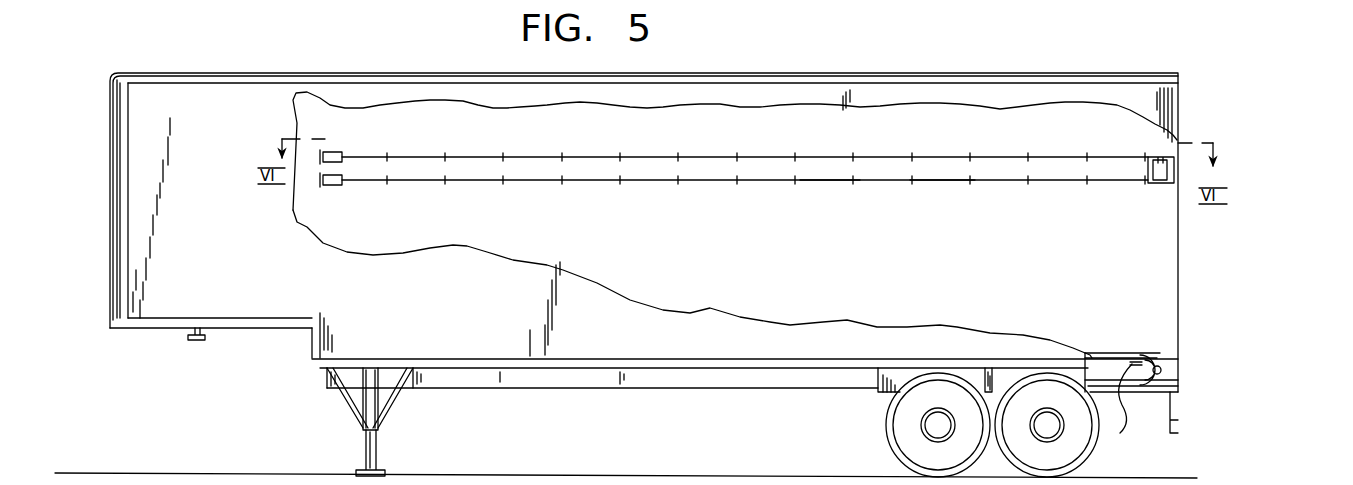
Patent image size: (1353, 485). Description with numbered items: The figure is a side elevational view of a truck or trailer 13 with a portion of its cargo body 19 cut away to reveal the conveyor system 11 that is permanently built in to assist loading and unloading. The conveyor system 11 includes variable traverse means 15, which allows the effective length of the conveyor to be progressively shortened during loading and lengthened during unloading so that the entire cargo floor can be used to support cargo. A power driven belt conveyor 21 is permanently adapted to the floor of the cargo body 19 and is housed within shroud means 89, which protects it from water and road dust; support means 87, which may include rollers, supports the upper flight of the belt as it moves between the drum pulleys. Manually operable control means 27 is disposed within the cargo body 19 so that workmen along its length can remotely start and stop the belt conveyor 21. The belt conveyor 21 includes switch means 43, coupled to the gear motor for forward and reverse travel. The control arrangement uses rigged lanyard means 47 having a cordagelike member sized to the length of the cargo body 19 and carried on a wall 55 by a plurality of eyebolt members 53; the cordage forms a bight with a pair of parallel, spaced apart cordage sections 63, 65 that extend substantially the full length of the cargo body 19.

The conveyor system 11 is at (1247, 107).
The truck or trailer 13 is at (182, 372).
The variable traverse means 15 is at (1263, 198).
The cargo body 19 is at (226, 263).
The belt conveyor 21 is at (1178, 368).
The control means 27 is at (427, 201).
The switch means 43 is at (1146, 150).
The rigged lanyard means 47 is at (837, 182).
The eyebolt members 53 is at (387, 155).
The wall 55 is at (958, 254).
The cordage section 63 is at (722, 156).
The cordage section 65 is at (765, 182).
The support means 87 is at (1132, 412).
The shroud means 89 is at (750, 388).